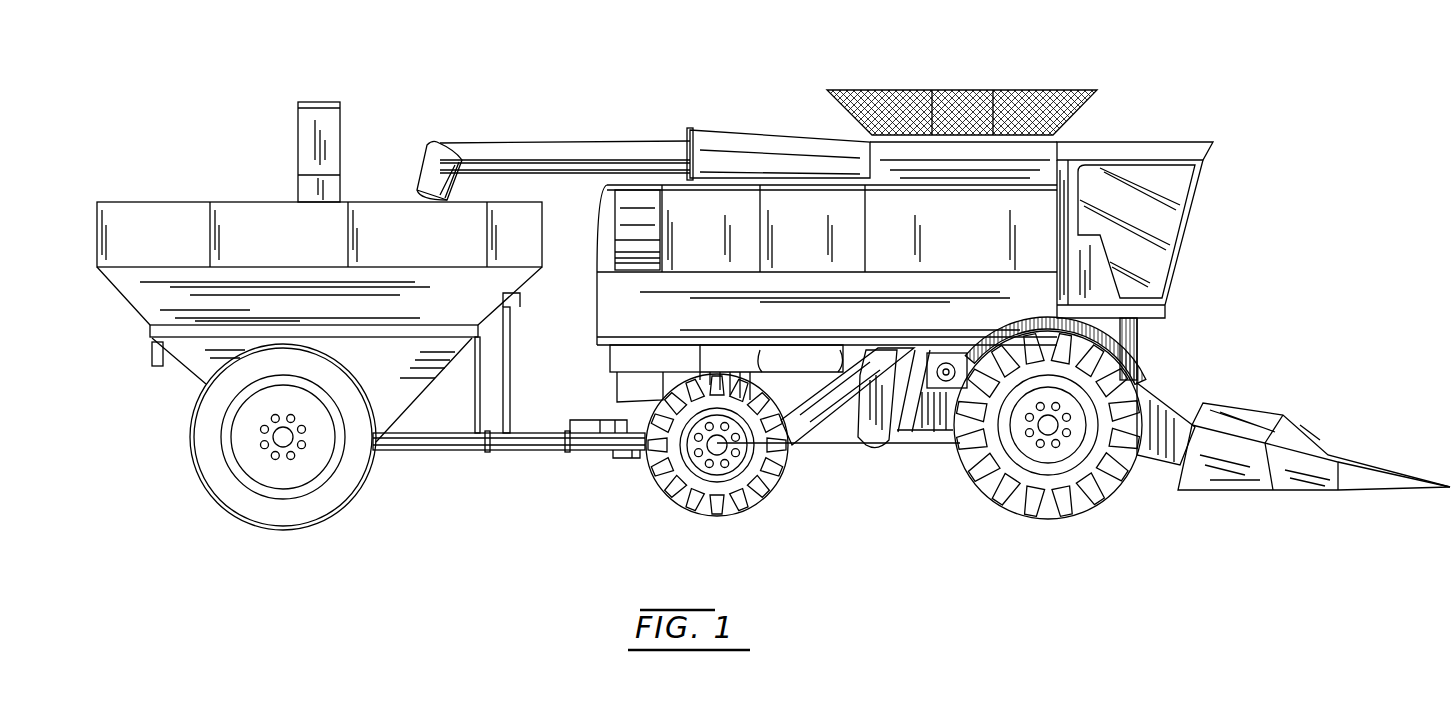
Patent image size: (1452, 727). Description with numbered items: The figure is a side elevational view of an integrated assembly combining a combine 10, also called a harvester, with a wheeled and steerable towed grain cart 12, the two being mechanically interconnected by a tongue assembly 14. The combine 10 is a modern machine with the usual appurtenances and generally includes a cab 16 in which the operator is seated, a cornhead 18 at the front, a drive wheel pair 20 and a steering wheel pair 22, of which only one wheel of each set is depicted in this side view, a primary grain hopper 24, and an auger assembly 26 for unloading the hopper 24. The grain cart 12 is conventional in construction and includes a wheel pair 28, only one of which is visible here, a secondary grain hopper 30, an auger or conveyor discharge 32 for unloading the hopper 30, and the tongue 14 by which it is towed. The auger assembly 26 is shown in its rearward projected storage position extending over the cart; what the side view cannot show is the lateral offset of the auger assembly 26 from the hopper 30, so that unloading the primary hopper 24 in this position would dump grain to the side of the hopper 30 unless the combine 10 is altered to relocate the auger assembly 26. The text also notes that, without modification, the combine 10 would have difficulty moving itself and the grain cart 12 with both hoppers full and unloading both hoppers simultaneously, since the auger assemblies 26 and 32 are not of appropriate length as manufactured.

The combine 10 is at (1157, 60).
The grain cart 12 is at (226, 116).
The tongue assembly 14 is at (494, 455).
The cab 16 is at (1203, 142).
The cornhead 18 is at (1290, 415).
The drive wheel pair 20 is at (1082, 512).
The steering wheel pair 22 is at (730, 513).
The primary grain hopper 24 is at (893, 90).
The auger assembly 26 is at (560, 142).
The wheel pair 28 is at (293, 528).
The secondary grain hopper 30 is at (217, 200).
The auger or conveyor discharge 32 is at (340, 120).